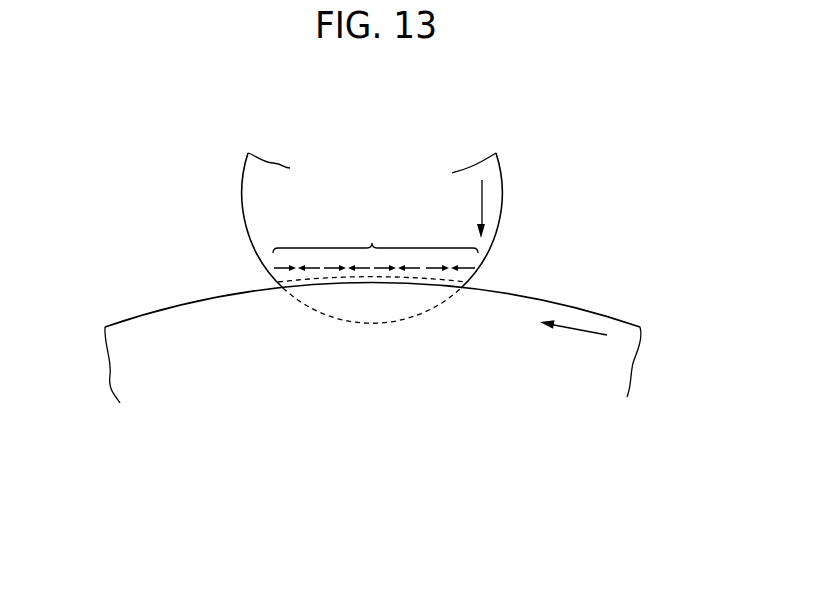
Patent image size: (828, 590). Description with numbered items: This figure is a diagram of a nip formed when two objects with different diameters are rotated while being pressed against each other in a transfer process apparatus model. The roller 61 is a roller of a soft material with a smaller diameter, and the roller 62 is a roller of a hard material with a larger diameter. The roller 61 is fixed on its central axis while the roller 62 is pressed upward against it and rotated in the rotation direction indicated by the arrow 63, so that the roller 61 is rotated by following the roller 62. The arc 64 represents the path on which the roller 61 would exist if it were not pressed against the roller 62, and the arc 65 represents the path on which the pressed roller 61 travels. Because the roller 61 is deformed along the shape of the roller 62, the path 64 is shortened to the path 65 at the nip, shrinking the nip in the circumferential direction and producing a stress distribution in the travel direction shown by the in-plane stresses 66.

The roller 61 is at (262, 192).
The roller 62 is at (193, 315).
The arrow 63 is at (484, 195).
The arc 64 is at (428, 312).
The arc 65 is at (334, 280).
The in-plane stresses 66 is at (375, 246).